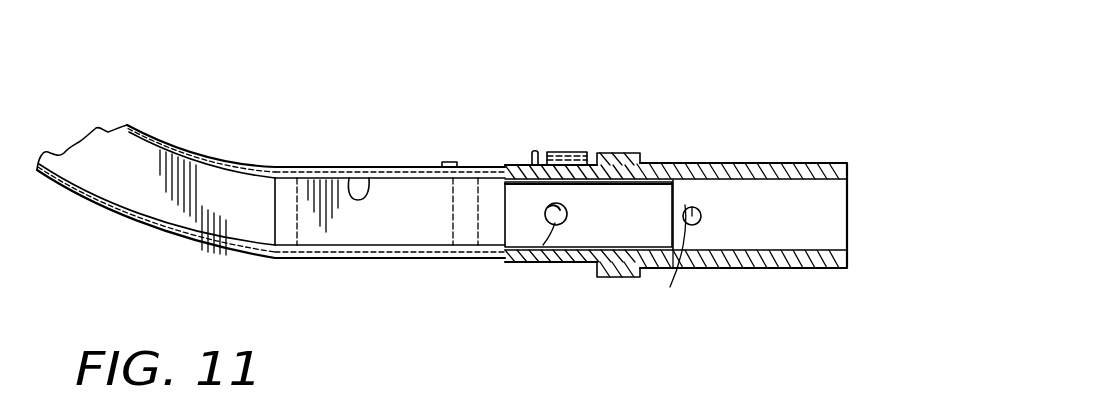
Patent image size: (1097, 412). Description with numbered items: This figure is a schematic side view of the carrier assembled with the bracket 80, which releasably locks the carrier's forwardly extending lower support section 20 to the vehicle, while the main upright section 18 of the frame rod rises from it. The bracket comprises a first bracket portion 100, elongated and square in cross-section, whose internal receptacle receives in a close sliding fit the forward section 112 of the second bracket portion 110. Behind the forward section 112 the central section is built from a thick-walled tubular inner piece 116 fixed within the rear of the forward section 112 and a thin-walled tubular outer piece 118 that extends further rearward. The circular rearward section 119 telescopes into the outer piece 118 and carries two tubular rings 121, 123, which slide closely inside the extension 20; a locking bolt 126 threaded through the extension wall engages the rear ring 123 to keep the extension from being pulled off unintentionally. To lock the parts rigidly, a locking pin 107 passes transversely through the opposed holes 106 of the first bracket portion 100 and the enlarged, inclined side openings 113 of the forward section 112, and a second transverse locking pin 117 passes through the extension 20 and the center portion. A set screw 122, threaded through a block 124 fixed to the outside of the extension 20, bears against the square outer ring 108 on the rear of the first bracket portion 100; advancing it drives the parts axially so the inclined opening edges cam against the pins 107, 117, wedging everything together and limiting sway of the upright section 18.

The bracket 80 is at (220, 92).
The main upright section 18 is at (143, 127).
The lower support section 20 is at (390, 262).
The outer ring 123 is at (282, 166).
The rearward section 119 is at (352, 170).
The locking bolt 126 is at (442, 162).
The outer ring 121 is at (467, 165).
The set screw 122 is at (535, 152).
The block 124 is at (570, 153).
The square outer ring 108 is at (607, 153).
The opposed holes 106 is at (675, 263).
The first bracket portion 100 is at (717, 162).
The second bracket portion 110 is at (792, 248).
The forward section 112 is at (735, 257).
The tubular inner piece 116 is at (575, 182).
The second transverse locking pin 117 is at (520, 262).
The tubular outer piece 118 is at (555, 262).
The opposed side openings 113 is at (702, 212).
The locking pin 107 is at (686, 205).